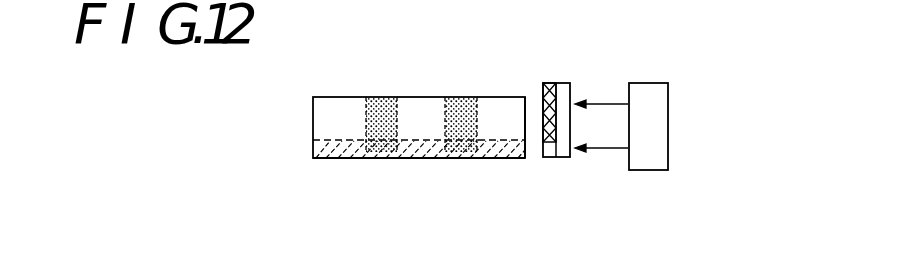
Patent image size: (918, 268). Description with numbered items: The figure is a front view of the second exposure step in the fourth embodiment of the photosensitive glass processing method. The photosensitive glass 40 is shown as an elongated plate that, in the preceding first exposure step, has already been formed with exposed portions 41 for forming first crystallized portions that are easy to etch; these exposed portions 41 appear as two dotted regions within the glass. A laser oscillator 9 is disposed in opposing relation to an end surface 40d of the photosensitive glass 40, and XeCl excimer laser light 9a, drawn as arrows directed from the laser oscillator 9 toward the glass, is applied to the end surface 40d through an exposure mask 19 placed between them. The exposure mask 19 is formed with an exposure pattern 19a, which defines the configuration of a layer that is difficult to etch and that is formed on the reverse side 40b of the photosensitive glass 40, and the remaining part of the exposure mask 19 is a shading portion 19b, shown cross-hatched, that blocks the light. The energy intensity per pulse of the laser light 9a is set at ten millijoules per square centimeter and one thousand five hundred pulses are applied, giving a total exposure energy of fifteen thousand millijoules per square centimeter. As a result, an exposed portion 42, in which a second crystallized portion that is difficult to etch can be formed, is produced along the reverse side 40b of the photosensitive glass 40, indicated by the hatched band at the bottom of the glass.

The laser oscillator 9 is at (649, 83).
The XeCl excimer laser light 9a is at (602, 102).
The exposure mask 19 is at (632, 202).
The exposure pattern 19a is at (554, 158).
The shading portion 19b is at (547, 145).
The photosensitive glass 40 is at (303, 108).
The reverse side 40b is at (346, 160).
The end surface 40d is at (529, 96).
The exposed portions 41 is at (377, 99).
The exposed portion 42 is at (313, 150).